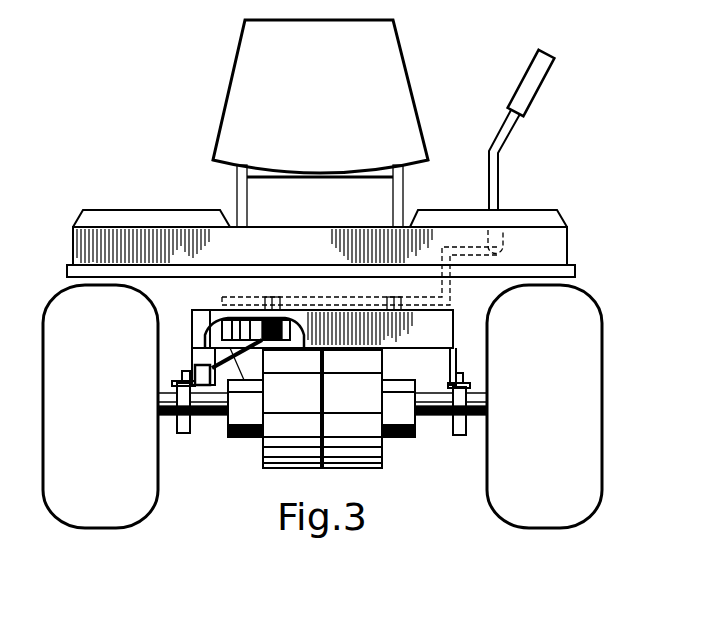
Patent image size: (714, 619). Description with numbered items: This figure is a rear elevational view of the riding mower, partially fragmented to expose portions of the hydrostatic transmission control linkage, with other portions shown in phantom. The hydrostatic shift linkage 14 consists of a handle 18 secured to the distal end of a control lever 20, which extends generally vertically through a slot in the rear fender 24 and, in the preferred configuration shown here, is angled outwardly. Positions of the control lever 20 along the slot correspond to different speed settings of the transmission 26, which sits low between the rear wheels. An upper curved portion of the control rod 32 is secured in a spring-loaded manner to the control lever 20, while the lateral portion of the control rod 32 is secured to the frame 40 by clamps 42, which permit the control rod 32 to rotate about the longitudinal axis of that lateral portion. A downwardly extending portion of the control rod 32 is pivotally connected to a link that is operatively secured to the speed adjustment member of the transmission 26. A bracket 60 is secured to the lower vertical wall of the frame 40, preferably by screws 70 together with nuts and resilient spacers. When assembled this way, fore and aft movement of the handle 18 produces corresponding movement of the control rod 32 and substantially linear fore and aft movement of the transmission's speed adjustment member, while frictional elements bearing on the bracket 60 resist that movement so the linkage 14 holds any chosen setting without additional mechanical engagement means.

The hydrostatic shift linkage 14 is at (557, 116).
The handle 18 is at (537, 77).
The control lever 20 is at (500, 148).
The rear fender 24 is at (556, 210).
The transmission 26 is at (270, 478).
The control rod 32 is at (305, 292).
The frame 40 is at (192, 322).
The clamps 42 is at (268, 297).
The bracket 60 is at (244, 380).
The screws 70 is at (195, 370).